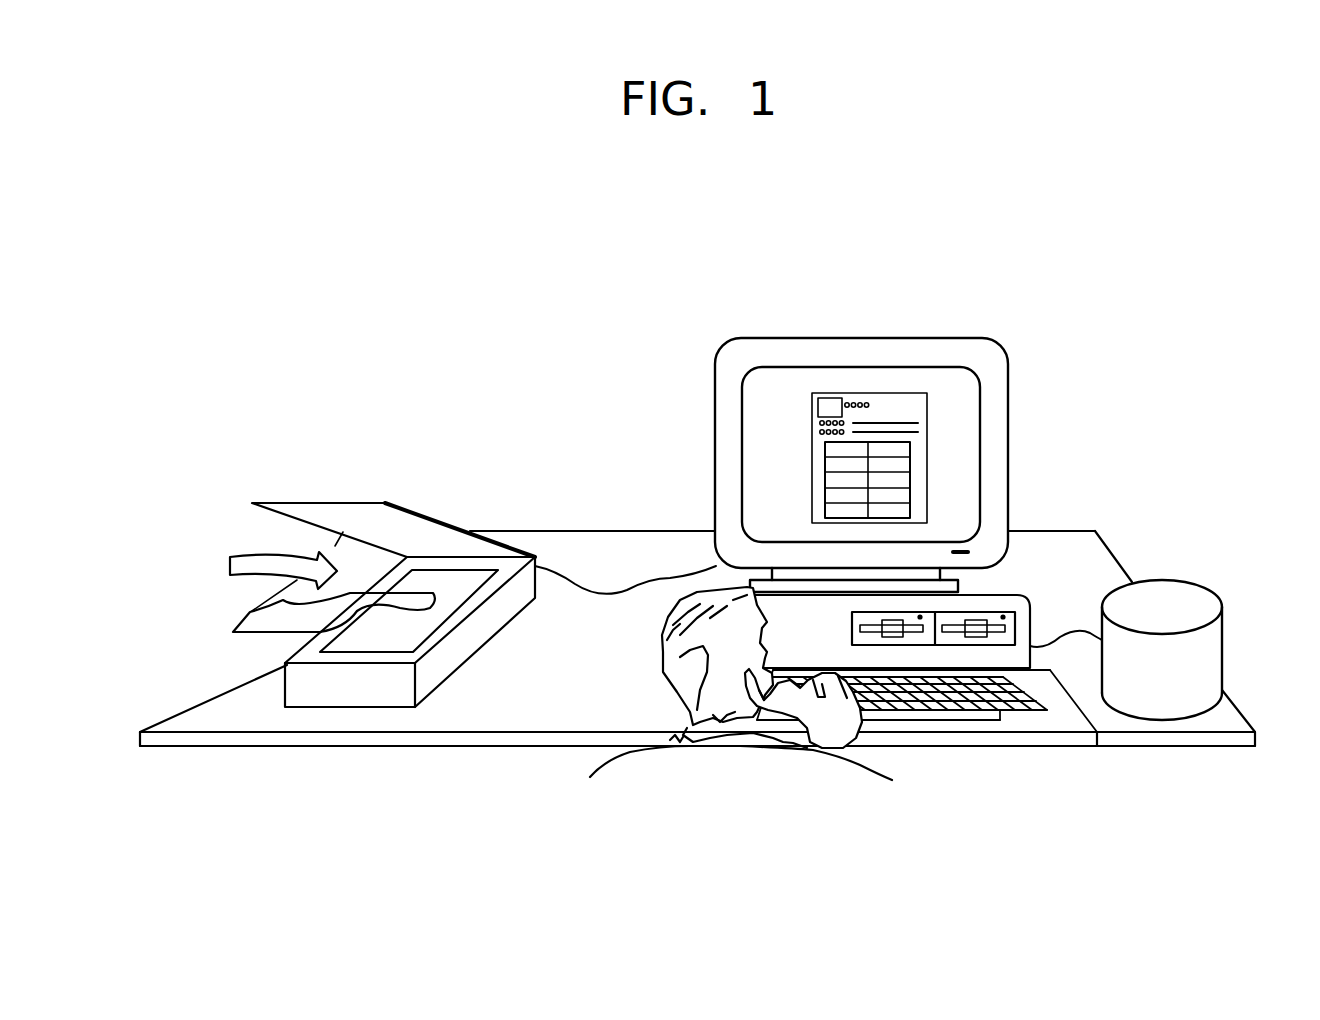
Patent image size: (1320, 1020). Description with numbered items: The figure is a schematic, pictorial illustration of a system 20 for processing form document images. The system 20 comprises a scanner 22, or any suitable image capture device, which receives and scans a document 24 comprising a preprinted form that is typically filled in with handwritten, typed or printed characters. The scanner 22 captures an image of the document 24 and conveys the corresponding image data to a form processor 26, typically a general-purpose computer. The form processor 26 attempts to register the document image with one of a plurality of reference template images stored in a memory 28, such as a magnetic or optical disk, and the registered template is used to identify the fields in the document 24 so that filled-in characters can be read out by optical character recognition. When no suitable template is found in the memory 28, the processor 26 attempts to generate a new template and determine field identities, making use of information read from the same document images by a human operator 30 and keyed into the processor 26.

The system 20 is at (722, 486).
The scanner 22 is at (418, 512).
The document 24 is at (255, 621).
The form processor 26 is at (1017, 602).
The memory 28 is at (1217, 657).
The human operator 30 is at (662, 650).